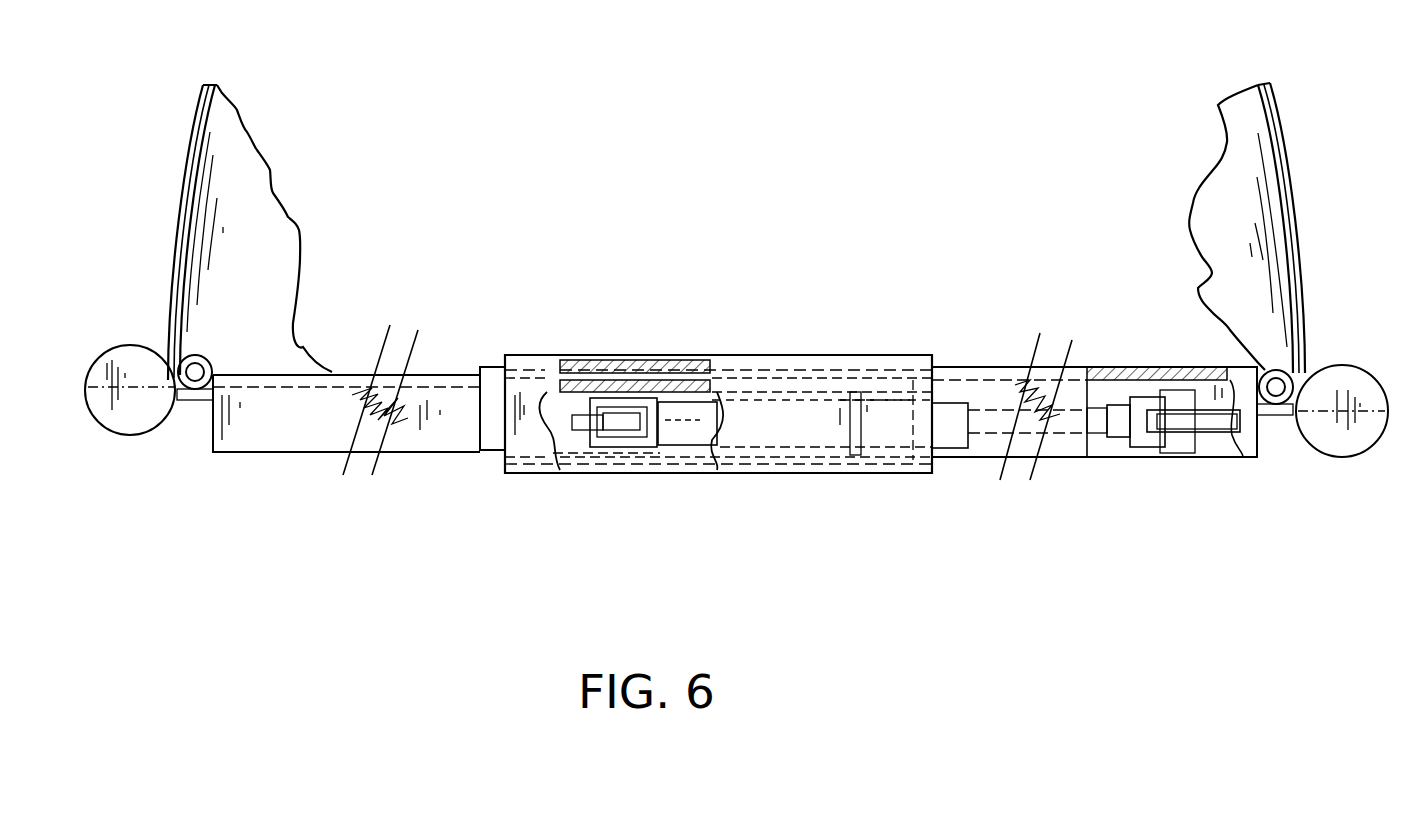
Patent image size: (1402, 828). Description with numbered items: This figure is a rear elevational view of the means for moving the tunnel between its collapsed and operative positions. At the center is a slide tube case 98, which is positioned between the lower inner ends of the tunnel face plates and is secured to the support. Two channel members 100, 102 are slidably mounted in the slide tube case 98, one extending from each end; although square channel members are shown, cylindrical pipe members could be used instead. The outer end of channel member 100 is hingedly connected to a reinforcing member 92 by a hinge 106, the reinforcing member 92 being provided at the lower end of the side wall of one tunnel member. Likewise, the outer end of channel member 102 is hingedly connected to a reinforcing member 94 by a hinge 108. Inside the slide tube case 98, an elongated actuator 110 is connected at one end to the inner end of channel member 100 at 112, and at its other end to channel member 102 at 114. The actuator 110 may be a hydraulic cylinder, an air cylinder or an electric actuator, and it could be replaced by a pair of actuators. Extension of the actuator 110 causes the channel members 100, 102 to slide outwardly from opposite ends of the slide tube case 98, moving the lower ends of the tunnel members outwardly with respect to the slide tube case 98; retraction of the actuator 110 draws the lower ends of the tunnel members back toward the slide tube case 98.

The reinforcing member 92 is at (123, 358).
The reinforcing member 94 is at (1341, 368).
The slide tube case 98 is at (800, 345).
The channel member 100 is at (458, 433).
The channel member 102 is at (1060, 462).
The hinge 106 is at (206, 367).
The hinge 108 is at (1265, 368).
The elongated actuator 110 is at (690, 423).
The connection of actuator to channel member 100 112 is at (600, 425).
The connection of actuator to channel member 102 114 is at (1210, 423).